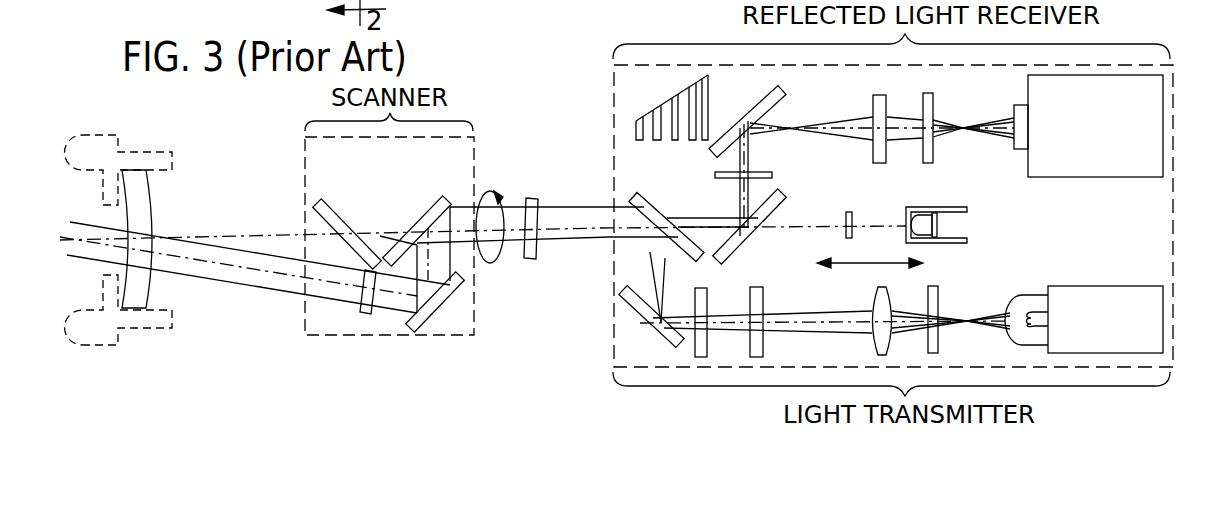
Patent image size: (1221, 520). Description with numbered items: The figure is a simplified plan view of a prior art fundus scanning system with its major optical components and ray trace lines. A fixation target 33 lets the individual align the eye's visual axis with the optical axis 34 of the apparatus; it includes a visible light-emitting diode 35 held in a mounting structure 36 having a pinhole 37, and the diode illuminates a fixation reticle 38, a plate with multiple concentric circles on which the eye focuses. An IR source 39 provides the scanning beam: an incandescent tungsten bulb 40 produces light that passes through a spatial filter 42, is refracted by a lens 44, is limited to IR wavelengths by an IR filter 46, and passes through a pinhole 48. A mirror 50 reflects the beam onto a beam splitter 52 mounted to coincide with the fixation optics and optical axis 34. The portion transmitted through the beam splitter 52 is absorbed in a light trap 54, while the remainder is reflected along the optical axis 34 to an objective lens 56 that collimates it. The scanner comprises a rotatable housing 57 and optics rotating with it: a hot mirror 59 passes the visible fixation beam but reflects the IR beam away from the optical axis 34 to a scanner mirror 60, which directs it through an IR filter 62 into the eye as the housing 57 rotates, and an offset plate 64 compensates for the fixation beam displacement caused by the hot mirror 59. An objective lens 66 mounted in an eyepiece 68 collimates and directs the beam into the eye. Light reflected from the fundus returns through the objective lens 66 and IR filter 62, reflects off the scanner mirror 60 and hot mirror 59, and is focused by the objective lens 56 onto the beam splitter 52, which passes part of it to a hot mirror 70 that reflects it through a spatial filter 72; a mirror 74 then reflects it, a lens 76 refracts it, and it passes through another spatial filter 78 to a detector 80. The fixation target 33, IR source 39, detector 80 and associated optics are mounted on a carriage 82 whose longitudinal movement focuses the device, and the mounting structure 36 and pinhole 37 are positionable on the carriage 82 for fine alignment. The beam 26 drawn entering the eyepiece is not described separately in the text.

The light beam 26 is at (256, 246).
The fixation target 33 is at (972, 225).
The optical axis 34 is at (270, 238).
The visible light-emitting diode 35 is at (920, 217).
The mounting structure 36 is at (907, 222).
The pinhole 37 is at (908, 228).
The fixation reticle 38 is at (843, 222).
The IR source 39 is at (1098, 270).
The incandescent tungsten bulb 40 is at (1023, 339).
The spatial filter 42 is at (938, 303).
The lens 44 is at (872, 340).
The IR filter 46 is at (748, 308).
The pinhole 48 is at (695, 342).
The mirror 50 is at (637, 312).
The beam splitter 52 is at (665, 204).
The light trap 54 is at (668, 112).
The objective lens 56 is at (527, 204).
The rotatable housing 57 is at (382, 338).
The hot mirror 59 is at (428, 206).
The scanner mirror 60 is at (452, 294).
The IR filter 62 is at (362, 320).
The offset plate 64 is at (342, 222).
The objective lens 66 is at (152, 212).
The eyepiece 68 is at (67, 330).
The hot mirror 70 is at (736, 249).
The spatial filter 72 is at (760, 171).
The mirror 74 is at (752, 112).
The lens 76 is at (873, 108).
The spatial filter 78 is at (922, 107).
The detector 80 is at (1014, 113).
The carriage 82 is at (609, 78).